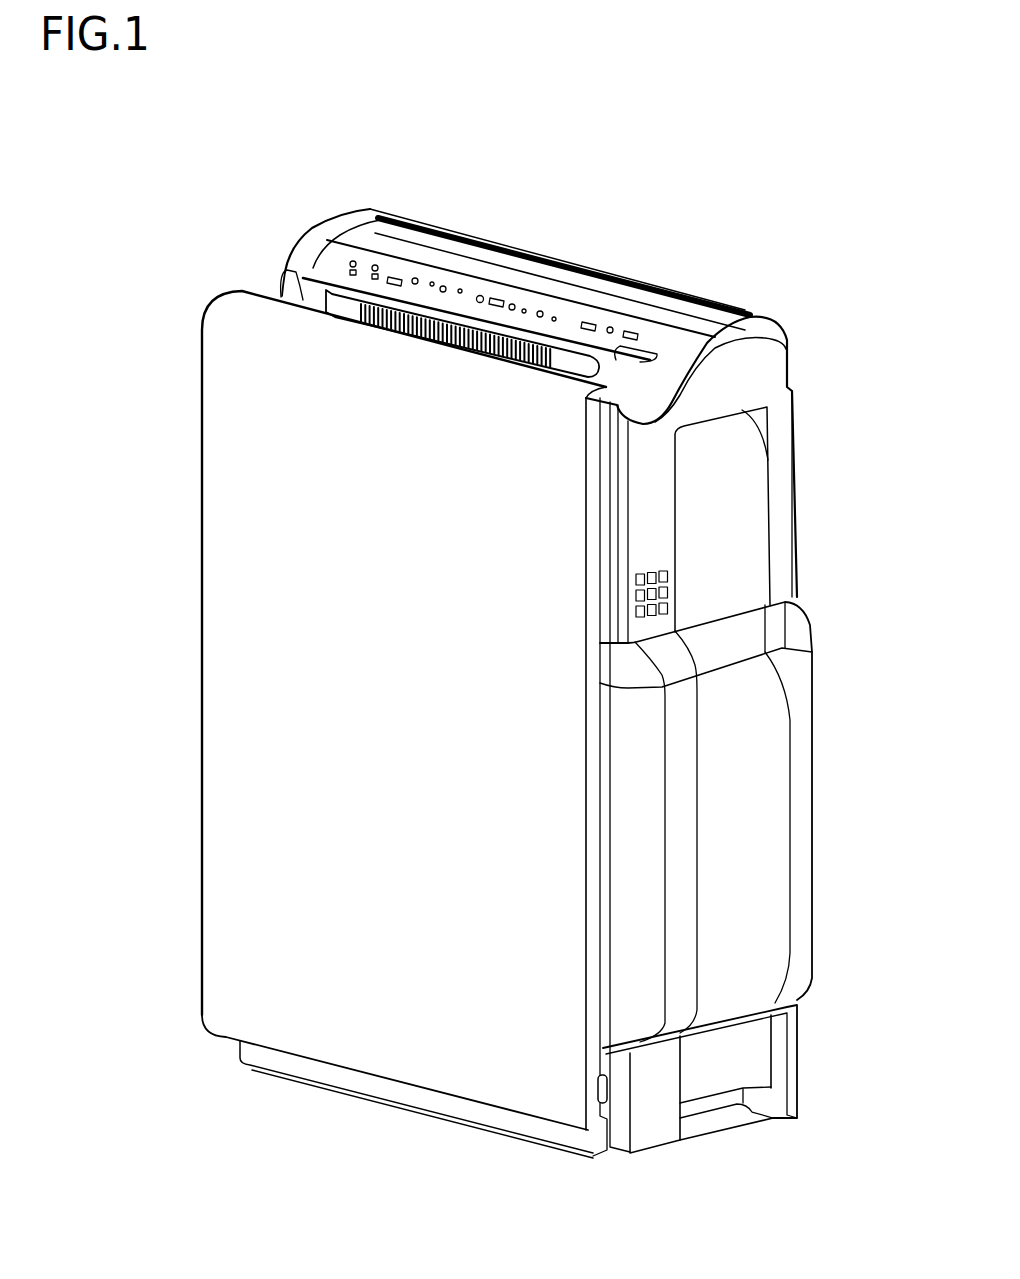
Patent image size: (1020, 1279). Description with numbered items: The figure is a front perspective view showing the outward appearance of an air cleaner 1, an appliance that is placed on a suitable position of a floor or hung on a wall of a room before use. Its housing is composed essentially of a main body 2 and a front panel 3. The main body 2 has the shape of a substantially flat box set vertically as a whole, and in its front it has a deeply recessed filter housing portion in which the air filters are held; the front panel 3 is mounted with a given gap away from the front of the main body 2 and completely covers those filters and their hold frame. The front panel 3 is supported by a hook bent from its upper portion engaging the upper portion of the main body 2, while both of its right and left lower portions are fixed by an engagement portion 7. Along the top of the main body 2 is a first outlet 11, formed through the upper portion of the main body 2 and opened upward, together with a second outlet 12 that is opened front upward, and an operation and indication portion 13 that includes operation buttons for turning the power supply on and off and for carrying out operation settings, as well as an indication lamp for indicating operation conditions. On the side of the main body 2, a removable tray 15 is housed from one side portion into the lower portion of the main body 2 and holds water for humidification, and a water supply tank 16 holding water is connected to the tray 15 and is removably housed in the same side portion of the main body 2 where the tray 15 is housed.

The air cleaner 1 is at (232, 230).
The main body 2 is at (781, 318).
The front panel 3 is at (206, 298).
The engagement portion 7 is at (609, 1110).
The first outlet 11 is at (568, 261).
The second outlet 12 is at (463, 330).
The operation and indication portion 13 is at (338, 258).
The tray 15 is at (798, 1046).
The water supply tank 16 is at (806, 727).